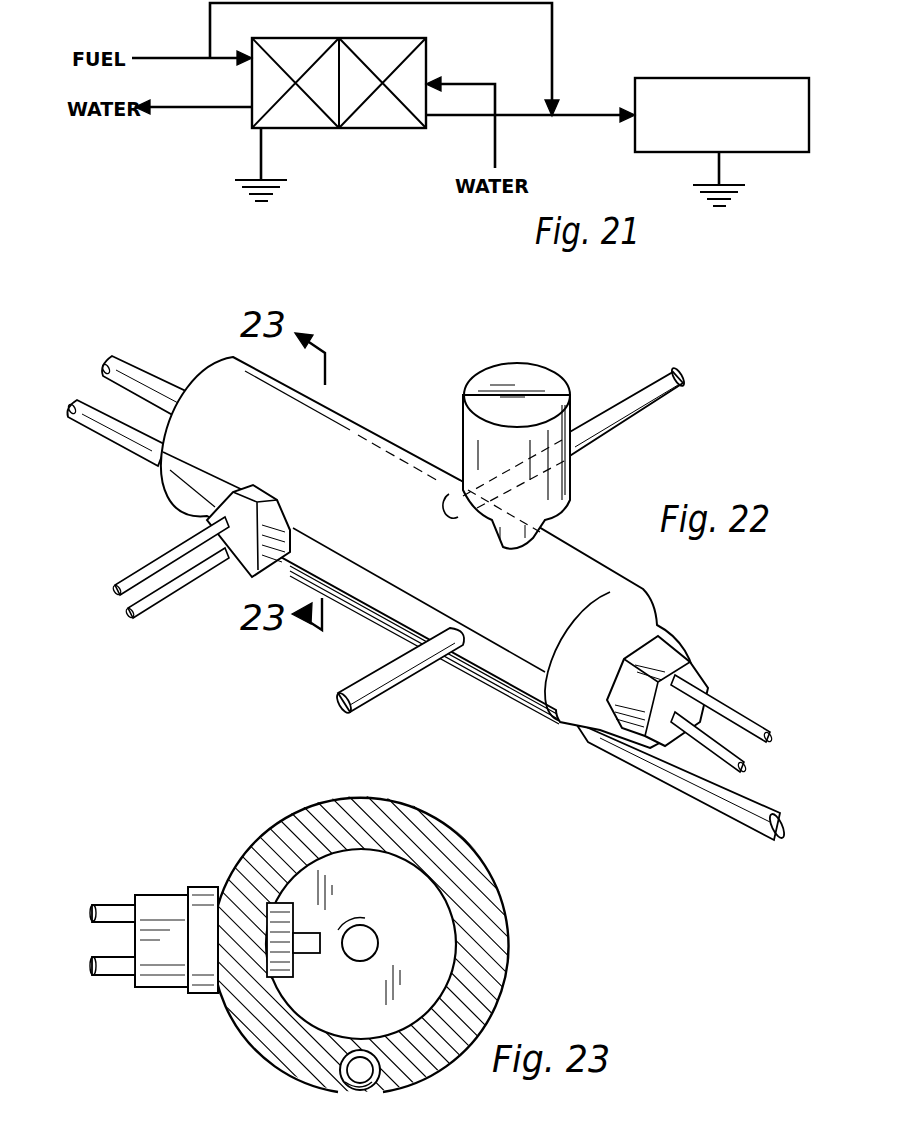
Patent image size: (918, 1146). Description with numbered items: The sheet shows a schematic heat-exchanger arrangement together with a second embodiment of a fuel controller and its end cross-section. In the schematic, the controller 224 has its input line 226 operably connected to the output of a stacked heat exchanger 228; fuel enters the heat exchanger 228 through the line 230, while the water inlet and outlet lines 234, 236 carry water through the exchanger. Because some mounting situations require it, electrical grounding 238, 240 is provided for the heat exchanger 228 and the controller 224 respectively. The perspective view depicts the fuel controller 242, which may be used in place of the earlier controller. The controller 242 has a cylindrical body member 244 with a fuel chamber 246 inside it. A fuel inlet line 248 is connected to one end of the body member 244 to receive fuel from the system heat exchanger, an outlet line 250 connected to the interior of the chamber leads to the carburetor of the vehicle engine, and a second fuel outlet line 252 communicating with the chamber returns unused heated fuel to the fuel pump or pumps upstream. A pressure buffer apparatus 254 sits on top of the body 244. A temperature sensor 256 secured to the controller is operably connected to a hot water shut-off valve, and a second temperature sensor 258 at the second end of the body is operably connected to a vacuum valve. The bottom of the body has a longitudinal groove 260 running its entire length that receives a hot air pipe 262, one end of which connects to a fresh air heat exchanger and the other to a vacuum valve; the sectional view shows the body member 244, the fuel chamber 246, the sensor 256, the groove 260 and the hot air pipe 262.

In FIG. 21, the controller 224 is at (712, 78).
In FIG. 21, the input line 226 is at (590, 114).
In FIG. 21, the stacked heat exchanger 228 is at (352, 130).
In FIG. 21, the fuel inlet line 230 is at (183, 57).
In FIG. 21, the water inlet line 234 is at (496, 136).
In FIG. 21, the water outlet line 236 is at (172, 110).
In FIG. 21, the electrical grounding 238 is at (263, 155).
In FIG. 21, the electrical grounding 240 is at (721, 168).
In FIG. 22, the fuel controller 242 is at (388, 636).
In FIG. 23, the cylindrical body member 244 is at (283, 820).
In FIG. 23, the fuel chamber 246 is at (412, 876).
In FIG. 22, the fuel inlet line 248 is at (146, 378).
In FIG. 22, the outlet line 250 is at (650, 390).
In FIG. 22, the second fuel outlet line 252 is at (392, 686).
In FIG. 22, the pressure buffer apparatus 254 is at (555, 482).
In FIG. 22, the temperature sensor 256 is at (273, 525).
In FIG. 23, the temperature sensor 256 is at (153, 978).
In FIG. 22, the second temperature sensor 258 is at (700, 660).
In FIG. 23, the longitudinal groove 260 is at (350, 1088).
In FIG. 22, the hot air pipe 262 is at (112, 436).
In FIG. 23, the hot air pipe 262 is at (373, 1088).